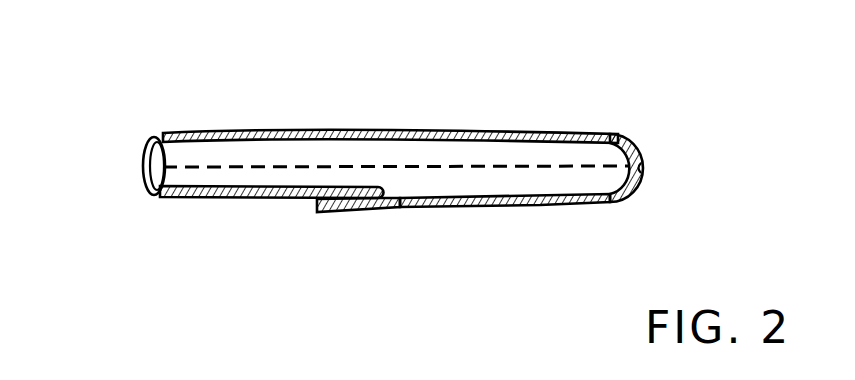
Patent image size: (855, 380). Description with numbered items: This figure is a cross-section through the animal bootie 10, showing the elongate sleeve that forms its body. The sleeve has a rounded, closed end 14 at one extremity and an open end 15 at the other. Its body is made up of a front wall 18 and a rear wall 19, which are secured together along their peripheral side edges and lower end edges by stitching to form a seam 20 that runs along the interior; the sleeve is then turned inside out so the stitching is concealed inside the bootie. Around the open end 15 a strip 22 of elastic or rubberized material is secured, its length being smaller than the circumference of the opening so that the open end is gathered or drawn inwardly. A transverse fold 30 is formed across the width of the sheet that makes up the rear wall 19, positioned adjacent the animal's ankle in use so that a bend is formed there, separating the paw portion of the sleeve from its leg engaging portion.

The animal bootie 10 is at (642, 123).
The closed end 14 is at (645, 177).
The open end 15 is at (147, 165).
The front wall 18 is at (470, 132).
The rear wall 19 is at (522, 214).
The seam 20 is at (345, 165).
The strip 22 is at (160, 133).
The transverse fold 30 is at (340, 215).